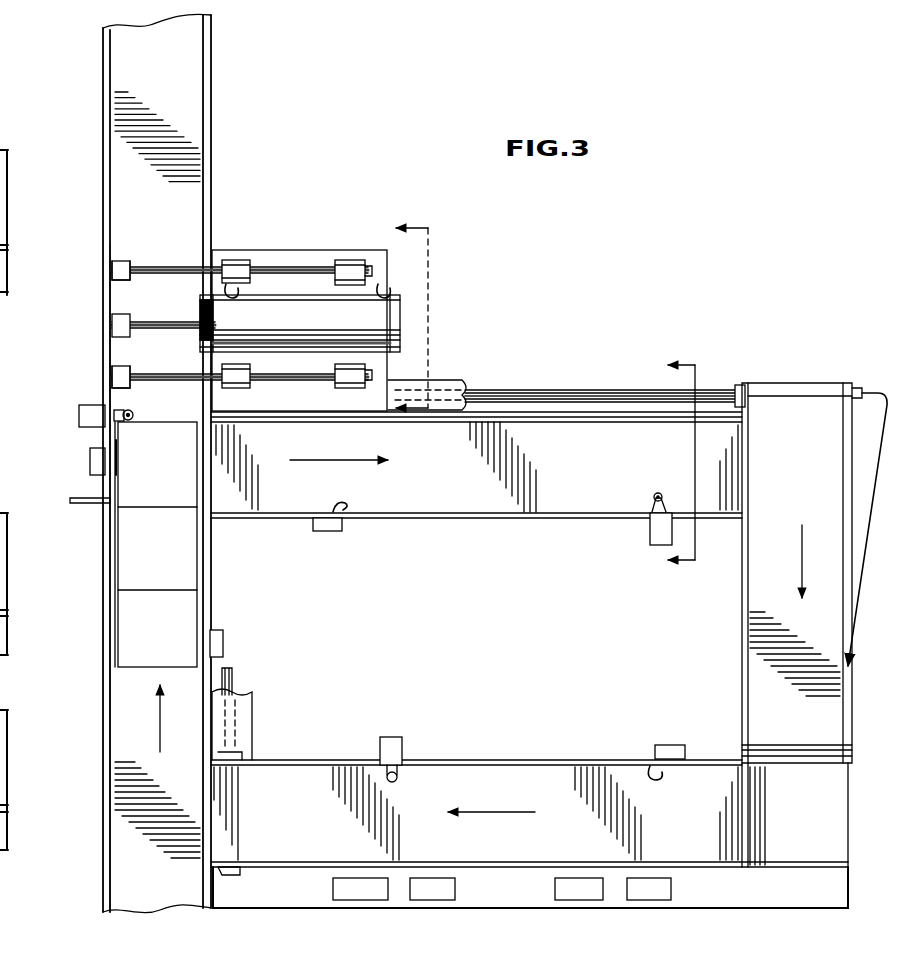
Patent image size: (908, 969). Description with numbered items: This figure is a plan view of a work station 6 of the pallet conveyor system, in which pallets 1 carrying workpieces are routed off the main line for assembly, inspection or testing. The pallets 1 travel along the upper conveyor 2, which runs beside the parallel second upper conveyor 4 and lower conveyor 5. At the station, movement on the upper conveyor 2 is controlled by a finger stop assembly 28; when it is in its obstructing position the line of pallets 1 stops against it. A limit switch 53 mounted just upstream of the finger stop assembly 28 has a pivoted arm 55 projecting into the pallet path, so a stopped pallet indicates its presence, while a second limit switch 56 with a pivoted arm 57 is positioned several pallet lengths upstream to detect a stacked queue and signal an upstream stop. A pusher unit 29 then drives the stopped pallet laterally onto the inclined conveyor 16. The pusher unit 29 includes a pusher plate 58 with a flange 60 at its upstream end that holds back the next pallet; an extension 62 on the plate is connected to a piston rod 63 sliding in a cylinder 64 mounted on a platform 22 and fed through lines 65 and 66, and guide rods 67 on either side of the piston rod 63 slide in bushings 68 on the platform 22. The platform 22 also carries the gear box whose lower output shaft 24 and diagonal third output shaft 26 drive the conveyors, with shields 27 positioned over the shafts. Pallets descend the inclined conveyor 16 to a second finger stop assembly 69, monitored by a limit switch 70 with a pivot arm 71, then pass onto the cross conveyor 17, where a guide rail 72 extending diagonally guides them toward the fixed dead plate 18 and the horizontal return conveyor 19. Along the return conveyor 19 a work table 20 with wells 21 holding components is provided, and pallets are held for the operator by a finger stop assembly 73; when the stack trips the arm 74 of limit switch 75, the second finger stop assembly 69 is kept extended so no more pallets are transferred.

The pallet 1 is at (190, 483).
The upper conveyor 2 is at (122, 880).
The second upper conveyor 4 is at (116, 235).
The lower conveyor 5 is at (405, 325).
The station 6 is at (505, 903).
The inclined conveyor 16 is at (515, 521).
The cross conveyor 17 is at (852, 668).
The fixed dead plate 18 is at (830, 823).
The horizontal return conveyor 19 is at (548, 760).
The work table 20 is at (748, 897).
The wells 21 is at (440, 882).
The platform 22 is at (320, 252).
The lower output shaft 24 is at (233, 678).
The third output shaft 26 is at (585, 392).
The shield 27 is at (447, 383).
The finger stop assembly 28 is at (134, 411).
The pusher unit 29 is at (100, 439).
The limit switch 53 is at (90, 466).
The arm 55 is at (120, 462).
The second limit switch 56 is at (224, 641).
The pivoted arm 57 is at (200, 636).
The pusher plate 58 is at (103, 391).
The flange 60 is at (88, 505).
The extension 62 is at (105, 302).
The piston rod 63 is at (175, 322).
The cylinder 64 is at (325, 332).
The line 65 is at (252, 312).
The line 66 is at (392, 287).
The guide rods 67 is at (270, 266).
The bushings 68 is at (232, 262).
The second finger stop assembly 69 is at (653, 500).
The limit switch 70 is at (330, 531).
The pivot arm 71 is at (338, 502).
The guide rail 72 is at (870, 463).
The finger stop assembly 73 is at (395, 782).
The arm 74 is at (662, 776).
The limit switch 75 is at (685, 722).